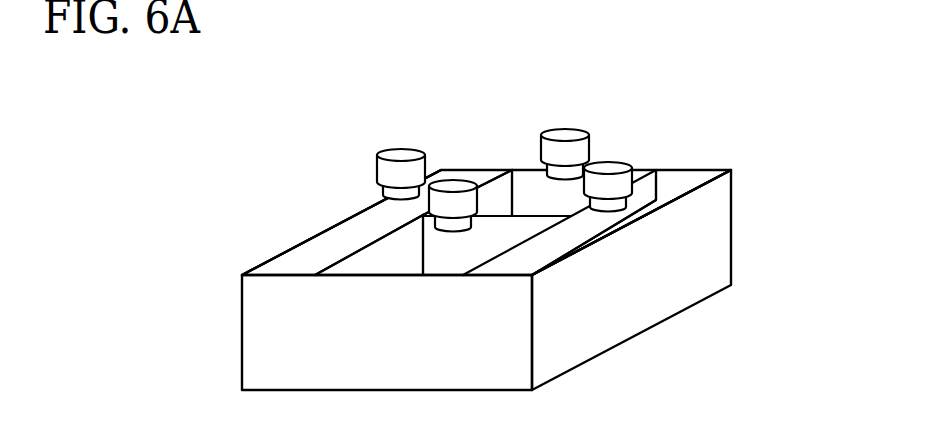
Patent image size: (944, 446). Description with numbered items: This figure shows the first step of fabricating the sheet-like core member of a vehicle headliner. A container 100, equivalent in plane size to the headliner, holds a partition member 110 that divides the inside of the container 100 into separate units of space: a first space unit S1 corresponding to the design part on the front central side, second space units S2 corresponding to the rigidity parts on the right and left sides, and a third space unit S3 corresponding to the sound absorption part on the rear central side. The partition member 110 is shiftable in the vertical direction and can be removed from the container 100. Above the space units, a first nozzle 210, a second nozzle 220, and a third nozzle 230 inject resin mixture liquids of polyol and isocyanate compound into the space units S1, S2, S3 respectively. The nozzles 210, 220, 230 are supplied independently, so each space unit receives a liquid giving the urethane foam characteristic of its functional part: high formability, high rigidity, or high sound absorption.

The container 100 is at (734, 190).
The partition member 110 is at (553, 250).
The first nozzle 210 is at (565, 134).
The second nozzle 220 is at (401, 152).
The third nozzle 230 is at (455, 181).
The first space unit S1 is at (520, 188).
The second space unit S2 is at (353, 228).
The third space unit S3 is at (410, 242).